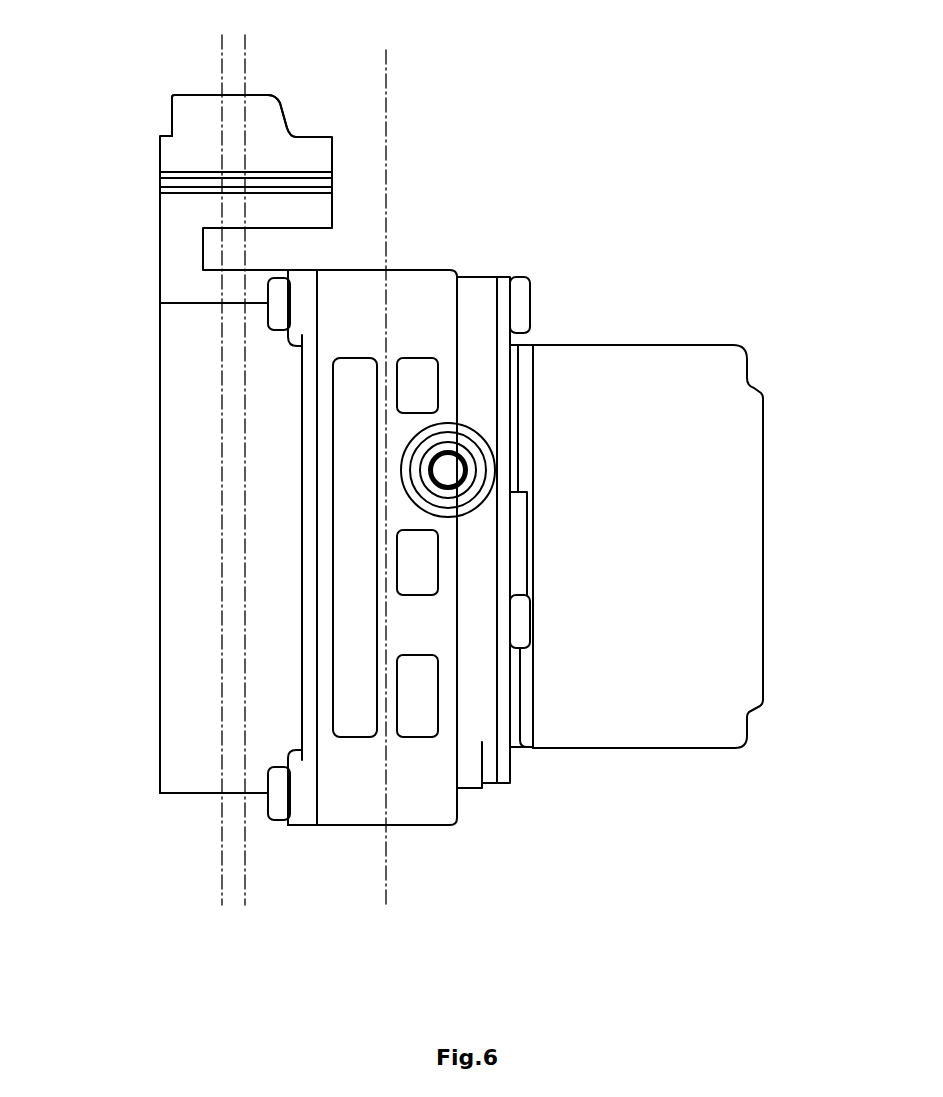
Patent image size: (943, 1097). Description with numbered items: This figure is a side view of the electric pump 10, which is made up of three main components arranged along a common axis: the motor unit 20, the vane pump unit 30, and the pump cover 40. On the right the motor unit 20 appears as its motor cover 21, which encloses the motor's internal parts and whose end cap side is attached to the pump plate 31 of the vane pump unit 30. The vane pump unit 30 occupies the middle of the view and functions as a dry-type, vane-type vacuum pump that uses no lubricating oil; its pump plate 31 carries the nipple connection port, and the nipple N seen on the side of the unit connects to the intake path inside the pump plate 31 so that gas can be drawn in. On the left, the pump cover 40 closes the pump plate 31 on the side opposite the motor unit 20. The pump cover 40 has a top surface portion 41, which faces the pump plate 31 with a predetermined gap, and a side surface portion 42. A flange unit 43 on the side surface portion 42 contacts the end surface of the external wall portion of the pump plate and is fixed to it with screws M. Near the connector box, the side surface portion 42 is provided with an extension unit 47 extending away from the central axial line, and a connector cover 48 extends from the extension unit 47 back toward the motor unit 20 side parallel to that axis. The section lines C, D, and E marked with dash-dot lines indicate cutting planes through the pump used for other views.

The electric pump 10 is at (565, 125).
The motor unit 20 is at (703, 315).
The motor cover 21 is at (631, 725).
The vane pump unit 30 is at (422, 230).
The pump plate 31 is at (423, 810).
The pump cover 40 is at (142, 597).
The top surface portion 41 is at (160, 455).
The side surface portion 42 is at (175, 787).
The flange unit 43 is at (307, 653).
The extension unit 47 is at (168, 152).
The connector cover 48 is at (190, 103).
The screws M is at (278, 312).
The nipple N is at (480, 447).
The section line C is at (386, 63).
The section line D is at (222, 48).
The section line E is at (245, 50).